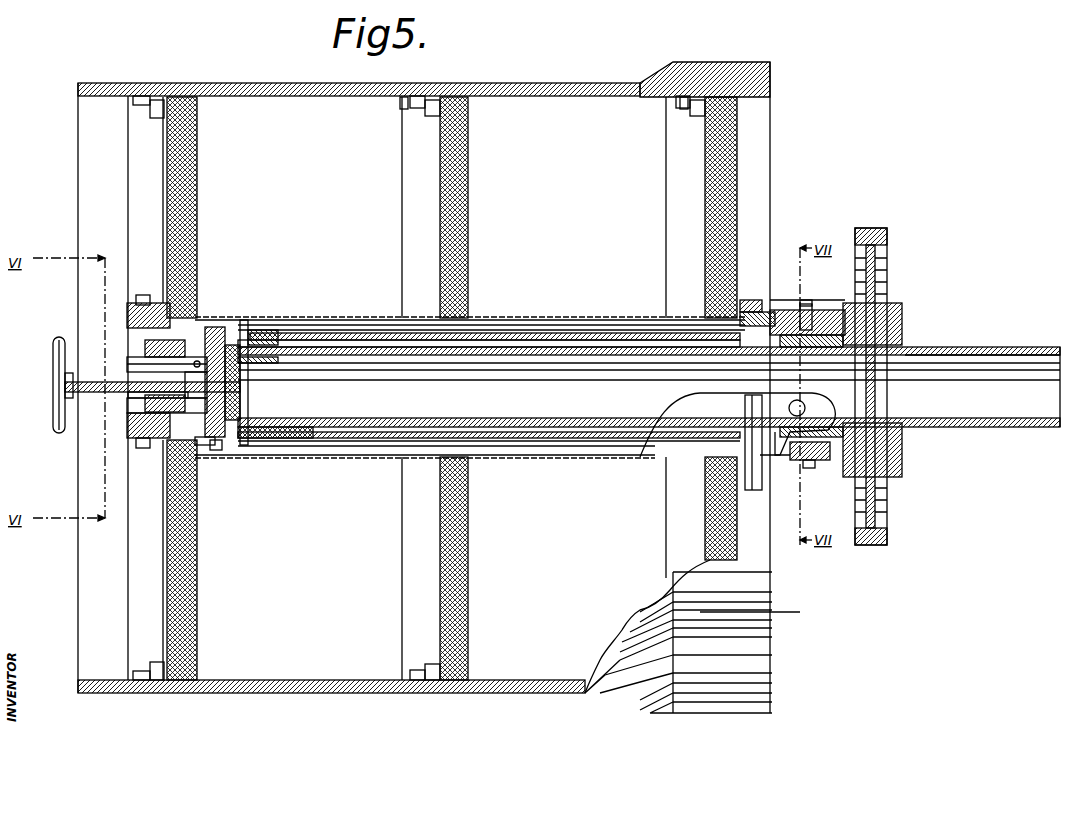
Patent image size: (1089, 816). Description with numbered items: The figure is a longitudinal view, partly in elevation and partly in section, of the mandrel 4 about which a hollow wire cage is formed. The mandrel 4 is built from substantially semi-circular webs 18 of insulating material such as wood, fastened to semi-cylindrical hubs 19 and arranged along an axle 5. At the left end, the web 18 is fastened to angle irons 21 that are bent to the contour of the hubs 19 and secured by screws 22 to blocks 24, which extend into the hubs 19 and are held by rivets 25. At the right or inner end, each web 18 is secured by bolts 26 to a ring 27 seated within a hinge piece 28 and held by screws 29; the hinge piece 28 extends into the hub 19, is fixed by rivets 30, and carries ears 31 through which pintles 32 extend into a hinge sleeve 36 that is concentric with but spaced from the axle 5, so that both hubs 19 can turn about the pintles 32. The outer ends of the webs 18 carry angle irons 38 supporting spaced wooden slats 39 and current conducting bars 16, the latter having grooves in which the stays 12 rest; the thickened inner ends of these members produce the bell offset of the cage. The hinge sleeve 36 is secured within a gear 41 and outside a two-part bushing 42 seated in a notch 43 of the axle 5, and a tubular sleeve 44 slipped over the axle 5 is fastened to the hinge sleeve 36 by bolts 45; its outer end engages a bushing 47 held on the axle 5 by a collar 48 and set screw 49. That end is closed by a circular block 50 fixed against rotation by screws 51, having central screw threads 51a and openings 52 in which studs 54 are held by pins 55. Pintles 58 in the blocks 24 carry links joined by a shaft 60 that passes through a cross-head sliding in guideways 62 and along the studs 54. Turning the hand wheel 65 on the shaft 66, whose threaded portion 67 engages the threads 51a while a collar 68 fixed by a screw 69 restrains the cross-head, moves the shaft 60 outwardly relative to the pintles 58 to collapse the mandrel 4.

The mandrel 4 is at (612, 165).
The axle 5 is at (985, 347).
The stays 12 is at (800, 612).
The current conducting bars 16 is at (772, 612).
The webs 18 is at (190, 192).
The hubs 19 is at (574, 317).
The angle irons 21 is at (160, 300).
The screws 22 is at (150, 300).
The blocks 24 is at (125, 310).
The rivets 25 is at (185, 305).
The bolts 26 is at (748, 310).
The ring 27 is at (752, 312).
The hinge piece 28 is at (758, 302).
The screws 29 is at (770, 312).
The rivets 30 is at (405, 112).
The ears 31 is at (800, 312).
The pintles 32 is at (805, 416).
The hinge sleeve 36 is at (902, 326).
The angle irons 38 is at (136, 100).
The slats 39 is at (170, 90).
The gear 41 is at (888, 300).
The two-part bushing 42 is at (904, 345).
The notch 43 is at (915, 355).
The tubular sleeve 44 is at (492, 333).
The bolts 45 is at (806, 320).
The bushing 47 is at (290, 333).
The collar 48 is at (255, 363).
The set screw 49 is at (245, 380).
The circular block 50 is at (258, 330).
The screws 51 is at (232, 345).
The screw threads 51a is at (195, 440).
The openings 52 is at (140, 412).
The studs 54 is at (140, 380).
The pins 55 is at (210, 327).
The pintles 58 is at (145, 346).
The shaft 60 is at (127, 360).
The guideways 62 is at (140, 296).
The hand wheel 65 is at (53, 374).
The shaft 66 is at (80, 382).
The threaded portion 67 is at (205, 440).
The collar 68 is at (185, 400).
The screw 69 is at (150, 395).